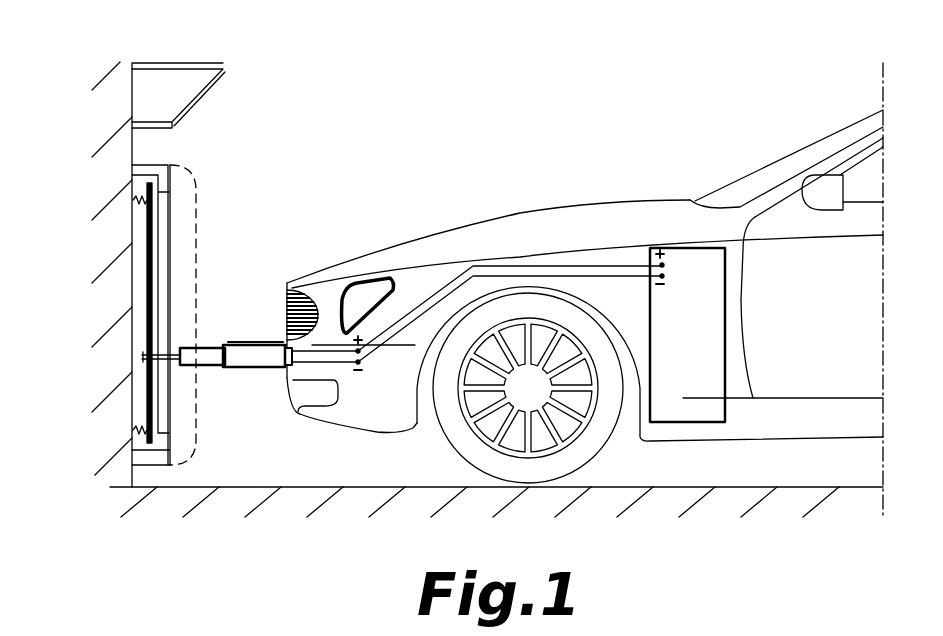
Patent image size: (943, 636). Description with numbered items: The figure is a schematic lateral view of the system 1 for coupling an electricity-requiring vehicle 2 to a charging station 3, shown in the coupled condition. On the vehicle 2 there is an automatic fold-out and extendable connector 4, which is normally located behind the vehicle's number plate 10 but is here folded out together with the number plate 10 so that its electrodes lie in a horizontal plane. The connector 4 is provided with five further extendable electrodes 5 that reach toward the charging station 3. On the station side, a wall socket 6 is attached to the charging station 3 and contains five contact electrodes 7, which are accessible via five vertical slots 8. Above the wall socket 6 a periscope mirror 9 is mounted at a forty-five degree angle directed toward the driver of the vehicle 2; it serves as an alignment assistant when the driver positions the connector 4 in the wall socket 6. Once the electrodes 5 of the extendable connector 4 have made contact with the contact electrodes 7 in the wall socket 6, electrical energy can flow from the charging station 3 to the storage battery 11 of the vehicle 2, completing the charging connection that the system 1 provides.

The system 1 is at (800, 55).
The electricity-requiring vehicle 2 is at (793, 167).
The charging station 3 is at (112, 70).
The automatic fold-out and extendable connector 4 is at (262, 356).
The extendable electrodes 5 is at (178, 362).
The wall socket 6 is at (151, 166).
The contact electrodes 7 is at (153, 284).
The vertical slots 8 is at (167, 312).
The periscope mirror 9 is at (177, 80).
The number plate 10 is at (236, 343).
The storage battery 11 is at (697, 413).